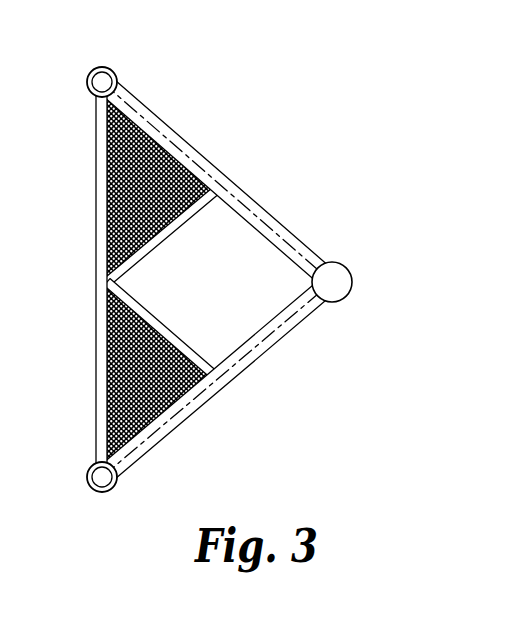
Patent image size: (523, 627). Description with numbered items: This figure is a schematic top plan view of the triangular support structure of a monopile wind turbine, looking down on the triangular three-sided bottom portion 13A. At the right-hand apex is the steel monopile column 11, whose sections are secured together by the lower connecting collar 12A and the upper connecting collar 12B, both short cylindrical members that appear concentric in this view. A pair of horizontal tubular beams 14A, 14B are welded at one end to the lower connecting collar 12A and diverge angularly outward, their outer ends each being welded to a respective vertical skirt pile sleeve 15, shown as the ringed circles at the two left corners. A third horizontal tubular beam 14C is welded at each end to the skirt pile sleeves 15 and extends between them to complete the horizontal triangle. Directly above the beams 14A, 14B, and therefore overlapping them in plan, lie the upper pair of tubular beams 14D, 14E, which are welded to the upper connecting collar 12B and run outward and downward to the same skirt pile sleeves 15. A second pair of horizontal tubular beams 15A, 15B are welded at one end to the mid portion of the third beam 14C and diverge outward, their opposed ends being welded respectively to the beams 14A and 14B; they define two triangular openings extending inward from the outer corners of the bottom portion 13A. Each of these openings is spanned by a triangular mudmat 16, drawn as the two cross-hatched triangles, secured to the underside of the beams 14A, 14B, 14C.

The monopile column 11 is at (360, 283).
The lower connecting collar 12A is at (360, 308).
The upper connecting collar 12B is at (338, 303).
The triangular three-sided bottom portion 13A is at (179, 280).
The horizontal tubular beam 14A is at (217, 379).
The horizontal tubular beam 14B is at (216, 182).
The third horizontal tubular beam 14C is at (96, 296).
The upper tubular beam 14D is at (227, 390).
The upper tubular beam 14E is at (257, 195).
The skirt pile sleeve 15 is at (88, 77).
The horizontal tubular beam 15A is at (167, 239).
The horizontal tubular beam 15B is at (153, 318).
The triangular mudmat 16 is at (146, 134).